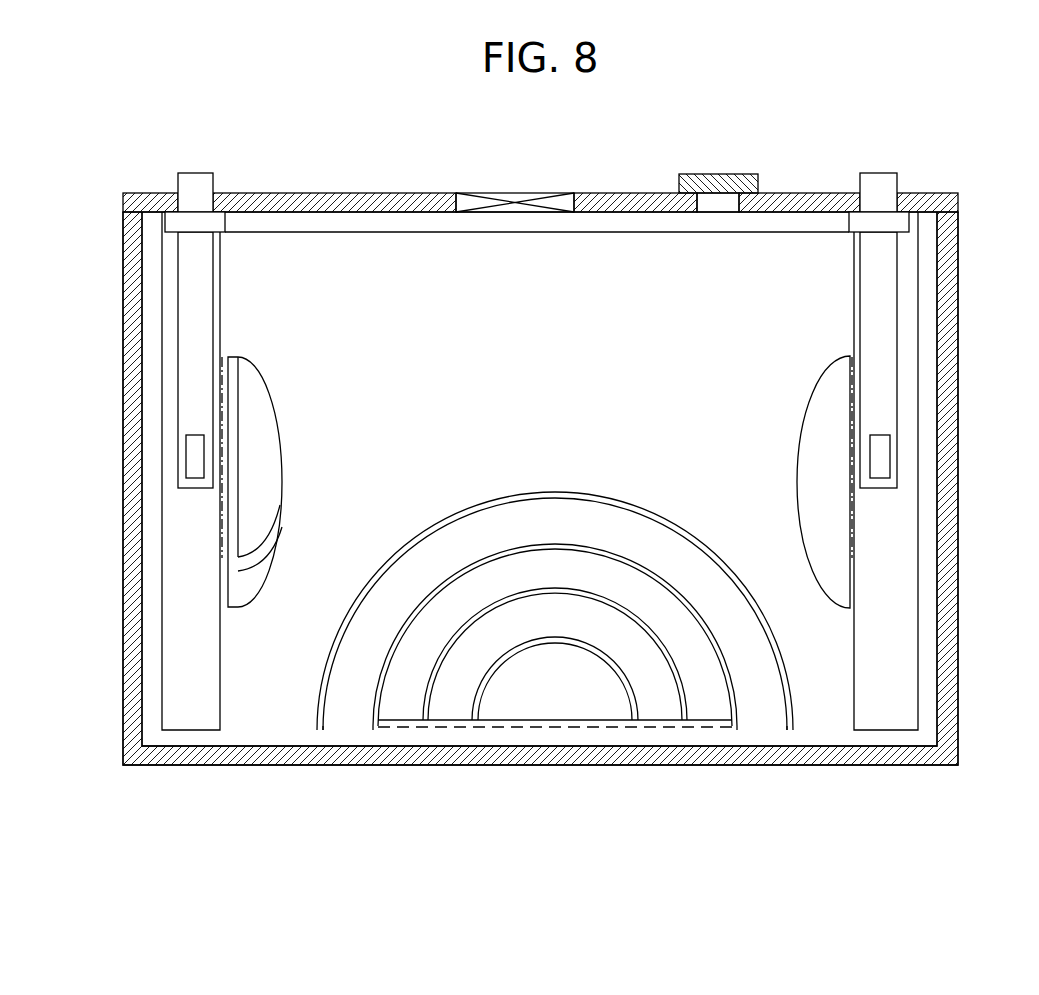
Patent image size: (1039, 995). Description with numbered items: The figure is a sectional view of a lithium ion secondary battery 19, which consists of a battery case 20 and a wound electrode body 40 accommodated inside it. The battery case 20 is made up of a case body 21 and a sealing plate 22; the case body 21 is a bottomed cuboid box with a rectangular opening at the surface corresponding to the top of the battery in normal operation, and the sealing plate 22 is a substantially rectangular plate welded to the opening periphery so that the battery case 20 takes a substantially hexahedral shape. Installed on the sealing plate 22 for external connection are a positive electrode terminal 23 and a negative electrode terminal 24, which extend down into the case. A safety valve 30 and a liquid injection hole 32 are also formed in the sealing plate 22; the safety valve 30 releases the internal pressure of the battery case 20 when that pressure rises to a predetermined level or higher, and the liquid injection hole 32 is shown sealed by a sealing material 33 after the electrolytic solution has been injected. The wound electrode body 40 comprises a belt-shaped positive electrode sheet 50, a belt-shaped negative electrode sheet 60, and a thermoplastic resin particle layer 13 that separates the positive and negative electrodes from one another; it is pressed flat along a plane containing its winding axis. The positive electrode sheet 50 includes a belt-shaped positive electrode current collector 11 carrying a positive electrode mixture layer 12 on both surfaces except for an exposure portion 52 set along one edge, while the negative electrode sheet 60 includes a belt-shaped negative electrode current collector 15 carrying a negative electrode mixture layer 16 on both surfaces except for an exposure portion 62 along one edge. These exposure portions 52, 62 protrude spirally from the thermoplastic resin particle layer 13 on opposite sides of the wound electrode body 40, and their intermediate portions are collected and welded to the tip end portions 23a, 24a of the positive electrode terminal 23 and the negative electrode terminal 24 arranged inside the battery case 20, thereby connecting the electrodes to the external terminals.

The lithium ion secondary battery 19 is at (955, 118).
The battery case 20 is at (780, 786).
The case body 21 is at (958, 688).
The sealing plate 22 is at (805, 193).
The positive electrode terminal 23 is at (198, 173).
The tip end portion 23a is at (185, 432).
The negative electrode terminal 24 is at (870, 173).
The tip end portion 24a is at (893, 432).
The safety valve 30 is at (525, 193).
The liquid injection hole 32 is at (742, 150).
The sealing material 33 is at (705, 174).
The wound electrode body 40 is at (341, 260).
The positive electrode current collector 11 is at (162, 661).
The exposure portion 52 is at (187, 696).
The negative electrode current collector 15 is at (917, 543).
The exposure portion 62 is at (887, 502).
The positive electrode mixture layer 12 is at (259, 404).
The negative electrode mixture layer 16 is at (252, 583).
The thermoplastic resin particle layer 13 is at (224, 565).
The positive electrode sheet 50 is at (452, 700).
The negative electrode sheet 60 is at (225, 595).